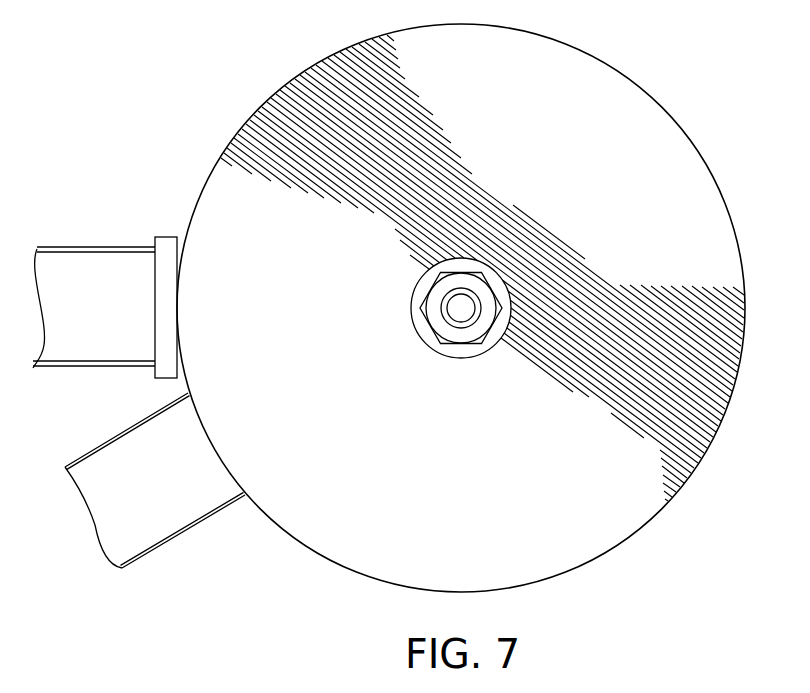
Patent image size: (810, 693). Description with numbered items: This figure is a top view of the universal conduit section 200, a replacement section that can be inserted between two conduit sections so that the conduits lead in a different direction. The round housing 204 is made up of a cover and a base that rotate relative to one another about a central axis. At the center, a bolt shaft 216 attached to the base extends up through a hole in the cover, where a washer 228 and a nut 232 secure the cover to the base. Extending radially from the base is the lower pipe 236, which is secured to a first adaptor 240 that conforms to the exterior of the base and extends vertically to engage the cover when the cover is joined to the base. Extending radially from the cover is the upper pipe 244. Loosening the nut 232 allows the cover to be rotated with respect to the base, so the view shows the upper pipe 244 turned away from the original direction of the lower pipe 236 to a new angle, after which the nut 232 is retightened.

The universal conduit section 200 is at (684, 123).
The housing 204 is at (713, 177).
The bolt shaft 216 is at (455, 307).
The washer 228 is at (413, 282).
The nut 232 is at (478, 348).
The lower pipe 236 is at (90, 263).
The first adaptor 240 is at (165, 267).
The upper pipe 244 is at (140, 448).